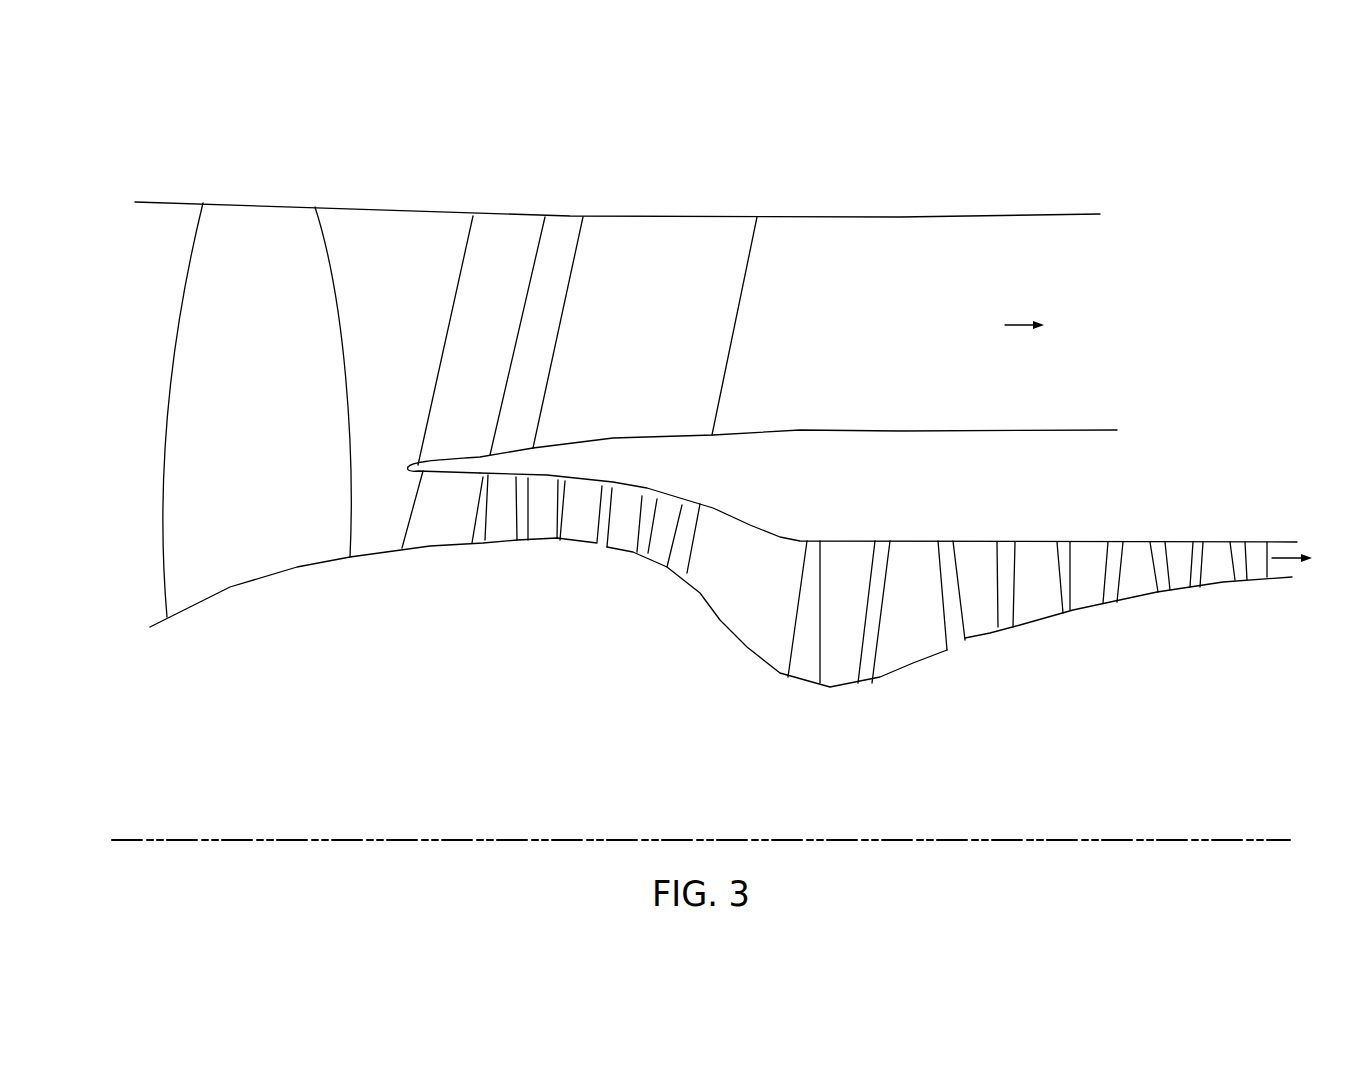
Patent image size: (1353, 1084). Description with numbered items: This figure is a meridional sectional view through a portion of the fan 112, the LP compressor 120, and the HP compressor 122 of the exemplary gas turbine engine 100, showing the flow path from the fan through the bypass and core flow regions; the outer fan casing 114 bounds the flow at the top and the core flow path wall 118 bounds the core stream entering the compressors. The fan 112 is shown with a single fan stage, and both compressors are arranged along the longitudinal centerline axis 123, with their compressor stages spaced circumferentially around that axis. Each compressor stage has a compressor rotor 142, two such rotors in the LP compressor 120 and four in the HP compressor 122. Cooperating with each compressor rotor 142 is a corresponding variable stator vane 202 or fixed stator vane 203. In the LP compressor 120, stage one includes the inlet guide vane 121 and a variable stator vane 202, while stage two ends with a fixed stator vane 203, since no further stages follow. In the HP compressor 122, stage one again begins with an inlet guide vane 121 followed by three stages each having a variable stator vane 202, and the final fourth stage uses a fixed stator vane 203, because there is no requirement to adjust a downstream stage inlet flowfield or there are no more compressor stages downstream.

The gas turbine engine 100 is at (1046, 192).
The fan 112 is at (258, 588).
The outer fan casing 114 is at (259, 202).
The core flow path outer wall 118 is at (791, 537).
The LP compressor 120 is at (670, 627).
The inlet guide vane 121 is at (493, 549).
The HP compressor 122 is at (1277, 735).
The longitudinal centerline axis 123 is at (786, 839).
The compressor rotor 142 is at (550, 478).
The variable stator vane 202 is at (576, 546).
The fixed stator vane 203 is at (685, 500).